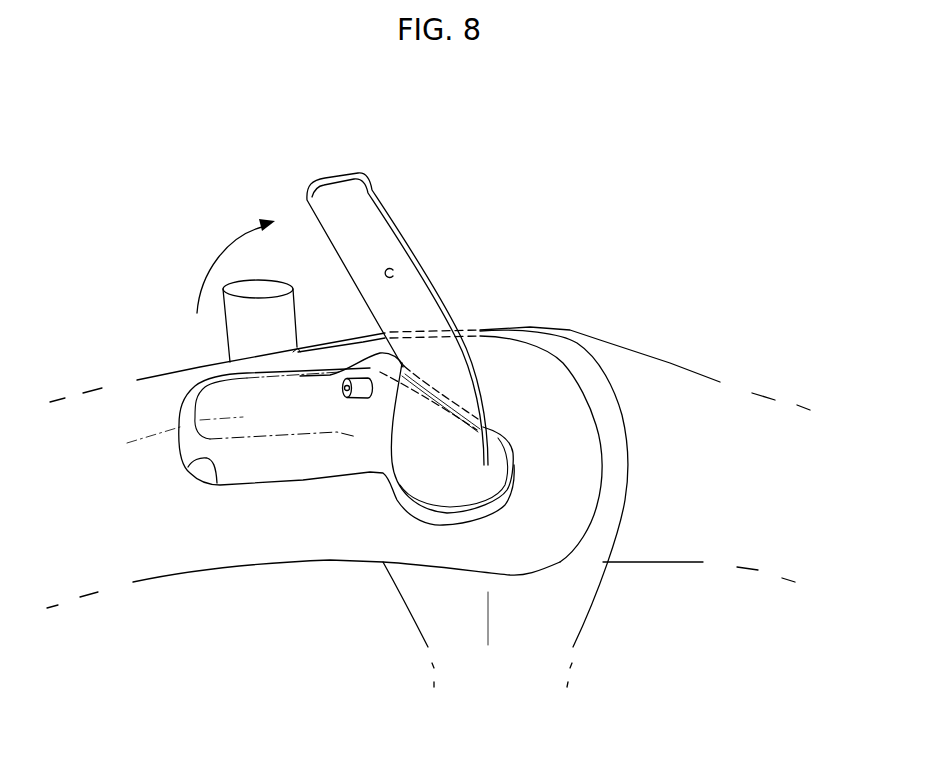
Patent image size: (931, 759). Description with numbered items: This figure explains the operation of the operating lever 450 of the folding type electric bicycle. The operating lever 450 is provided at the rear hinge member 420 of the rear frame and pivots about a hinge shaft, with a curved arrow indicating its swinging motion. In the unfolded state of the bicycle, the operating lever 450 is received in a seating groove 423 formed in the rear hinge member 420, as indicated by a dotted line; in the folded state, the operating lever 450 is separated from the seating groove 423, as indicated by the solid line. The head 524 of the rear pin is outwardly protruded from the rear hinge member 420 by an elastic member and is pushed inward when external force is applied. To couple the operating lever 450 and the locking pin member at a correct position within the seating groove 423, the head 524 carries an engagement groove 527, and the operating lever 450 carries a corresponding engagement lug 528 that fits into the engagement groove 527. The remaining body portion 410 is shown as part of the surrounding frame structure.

The main body housing 410 is at (683, 381).
The rear hinge member 420 is at (149, 390).
The seating groove 423 is at (217, 485).
The operating lever 450 is at (393, 243).
The head 524 is at (359, 378).
The engagement groove 527 is at (343, 392).
The engagement lug 528 is at (396, 271).